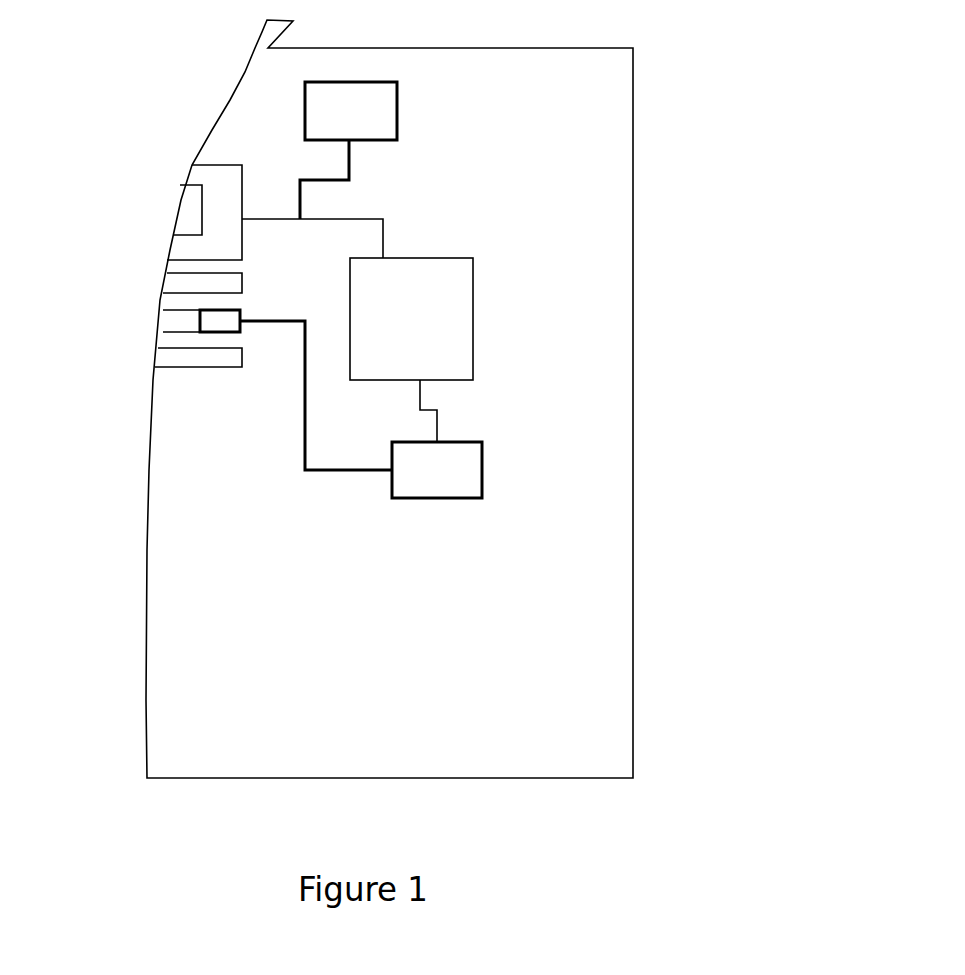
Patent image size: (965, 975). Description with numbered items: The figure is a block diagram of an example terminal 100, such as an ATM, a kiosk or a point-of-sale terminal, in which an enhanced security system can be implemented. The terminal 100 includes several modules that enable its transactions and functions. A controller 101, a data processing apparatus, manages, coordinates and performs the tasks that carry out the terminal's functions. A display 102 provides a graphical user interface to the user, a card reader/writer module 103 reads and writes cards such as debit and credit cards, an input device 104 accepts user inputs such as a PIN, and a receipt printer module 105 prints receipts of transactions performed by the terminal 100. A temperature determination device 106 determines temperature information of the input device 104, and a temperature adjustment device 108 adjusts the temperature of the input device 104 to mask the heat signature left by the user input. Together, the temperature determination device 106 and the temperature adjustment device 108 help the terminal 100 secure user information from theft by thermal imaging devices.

The terminal 100 is at (705, 137).
The controller 101 is at (389, 331).
The display 102 is at (188, 211).
The card reader/writer module 103 is at (172, 283).
The input device 104 is at (167, 320).
The receipt printer module 105 is at (158, 358).
The temperature determination device 106 is at (437, 470).
The temperature adjustment device 108 is at (348, 150).